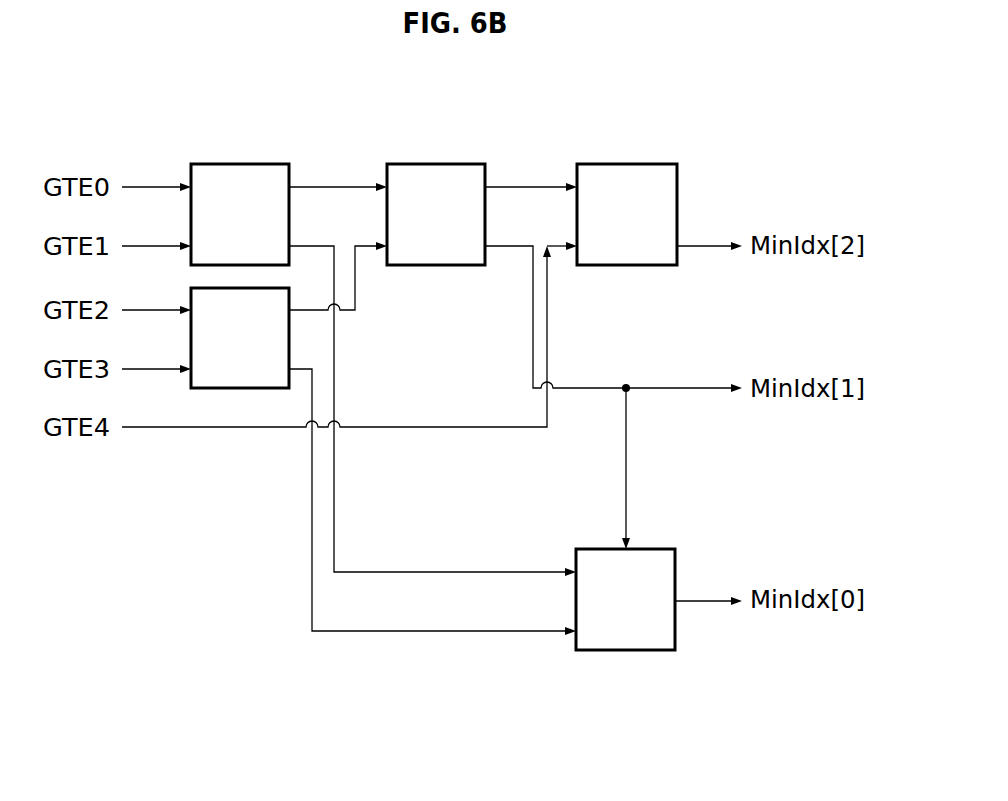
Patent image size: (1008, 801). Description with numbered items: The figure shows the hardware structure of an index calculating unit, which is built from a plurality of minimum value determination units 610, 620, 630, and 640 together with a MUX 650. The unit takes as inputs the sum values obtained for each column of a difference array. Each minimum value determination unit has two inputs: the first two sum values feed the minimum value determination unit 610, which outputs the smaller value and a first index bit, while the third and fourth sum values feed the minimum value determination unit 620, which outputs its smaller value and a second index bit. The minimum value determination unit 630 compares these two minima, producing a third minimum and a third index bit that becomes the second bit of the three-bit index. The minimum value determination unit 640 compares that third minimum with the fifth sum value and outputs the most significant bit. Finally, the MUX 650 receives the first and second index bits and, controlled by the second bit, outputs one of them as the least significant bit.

The minimum value determination unit 610 is at (242, 164).
The minimum value determination unit 620 is at (242, 388).
The minimum value determination unit 630 is at (437, 164).
The minimum value determination unit 640 is at (627, 164).
The MUX 650 is at (627, 650).